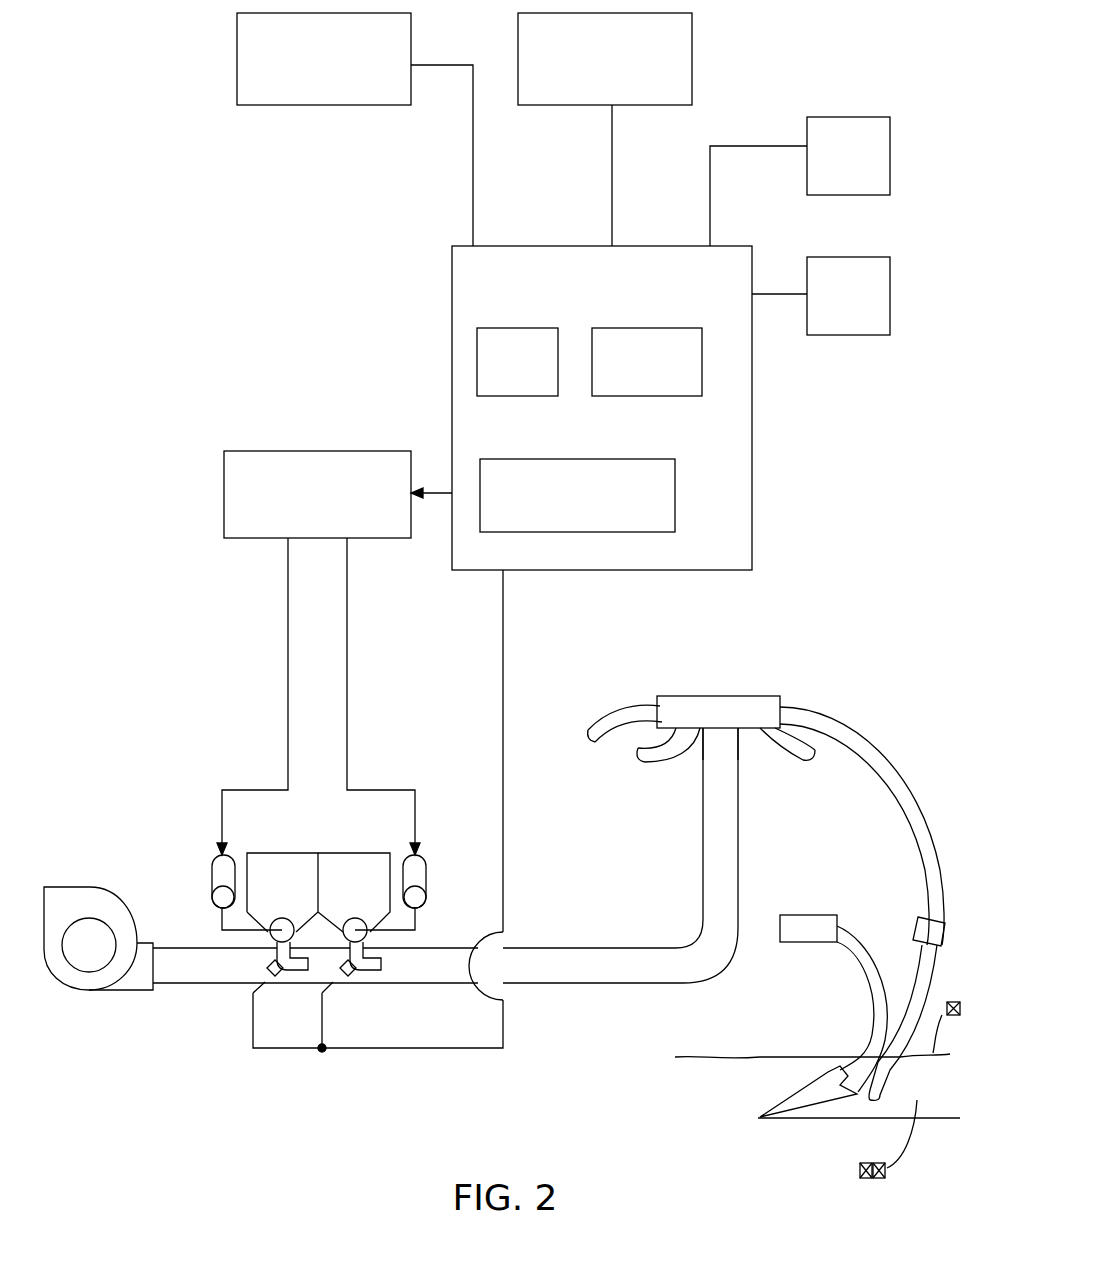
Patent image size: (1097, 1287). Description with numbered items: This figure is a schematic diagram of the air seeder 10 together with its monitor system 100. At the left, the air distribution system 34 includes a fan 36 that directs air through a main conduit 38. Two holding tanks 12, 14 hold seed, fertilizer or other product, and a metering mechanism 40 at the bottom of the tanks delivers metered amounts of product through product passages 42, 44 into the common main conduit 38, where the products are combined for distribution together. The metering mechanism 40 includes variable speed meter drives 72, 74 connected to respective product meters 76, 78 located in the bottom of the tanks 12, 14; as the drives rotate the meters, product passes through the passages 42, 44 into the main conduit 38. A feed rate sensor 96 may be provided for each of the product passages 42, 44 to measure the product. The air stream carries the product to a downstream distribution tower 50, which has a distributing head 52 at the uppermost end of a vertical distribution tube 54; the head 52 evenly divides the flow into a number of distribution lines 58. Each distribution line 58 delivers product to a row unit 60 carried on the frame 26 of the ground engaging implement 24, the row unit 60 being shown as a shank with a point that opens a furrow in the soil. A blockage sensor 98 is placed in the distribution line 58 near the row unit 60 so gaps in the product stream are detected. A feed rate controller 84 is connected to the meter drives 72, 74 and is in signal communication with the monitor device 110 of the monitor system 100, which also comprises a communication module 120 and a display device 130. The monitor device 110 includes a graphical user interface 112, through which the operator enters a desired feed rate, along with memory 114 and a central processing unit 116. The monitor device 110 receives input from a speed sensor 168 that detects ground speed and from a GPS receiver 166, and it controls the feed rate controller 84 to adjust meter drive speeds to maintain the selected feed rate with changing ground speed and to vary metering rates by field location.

The air seeder 10 is at (131, 742).
The holding tank 12 is at (282, 865).
The holding tank 14 is at (355, 867).
The ground engaging implement 24 is at (916, 719).
The frame 26 is at (806, 942).
The air distribution system 34 is at (166, 1003).
The fan 36 is at (108, 907).
The main conduit 38 is at (577, 985).
The metering mechanism 40 is at (423, 939).
The product passage 42 is at (298, 978).
The product passage 44 is at (372, 978).
The distribution tower 50 is at (692, 881).
The distributing head 52 is at (765, 696).
The vertical distribution tube 54 is at (703, 905).
The distribution line 58 is at (628, 740).
The row unit 60 is at (816, 1004).
The variable speed meter drive 72 is at (212, 863).
The variable speed meter drive 74 is at (428, 863).
The product meter 76 is at (278, 945).
The product meter 78 is at (357, 930).
The feed rate controller 84 is at (261, 451).
The feed rate sensor 96 is at (268, 972).
The blockage sensor 98 is at (918, 930).
The monitor system 100 is at (243, 259).
The monitor device 110 is at (652, 589).
The graphical user interface 112 is at (537, 328).
The memory 114 is at (631, 328).
The central processing unit 116 is at (662, 488).
The communication module 120 is at (293, 105).
The display device 130 is at (692, 40).
The GPS receiver 166 is at (812, 257).
The speed sensor 168 is at (812, 117).